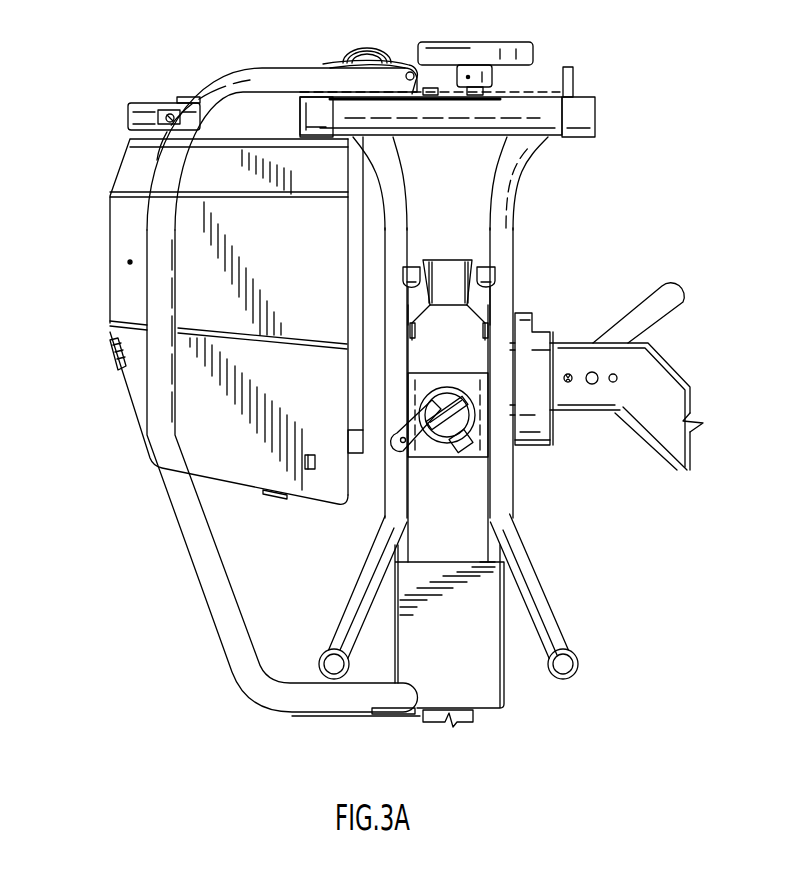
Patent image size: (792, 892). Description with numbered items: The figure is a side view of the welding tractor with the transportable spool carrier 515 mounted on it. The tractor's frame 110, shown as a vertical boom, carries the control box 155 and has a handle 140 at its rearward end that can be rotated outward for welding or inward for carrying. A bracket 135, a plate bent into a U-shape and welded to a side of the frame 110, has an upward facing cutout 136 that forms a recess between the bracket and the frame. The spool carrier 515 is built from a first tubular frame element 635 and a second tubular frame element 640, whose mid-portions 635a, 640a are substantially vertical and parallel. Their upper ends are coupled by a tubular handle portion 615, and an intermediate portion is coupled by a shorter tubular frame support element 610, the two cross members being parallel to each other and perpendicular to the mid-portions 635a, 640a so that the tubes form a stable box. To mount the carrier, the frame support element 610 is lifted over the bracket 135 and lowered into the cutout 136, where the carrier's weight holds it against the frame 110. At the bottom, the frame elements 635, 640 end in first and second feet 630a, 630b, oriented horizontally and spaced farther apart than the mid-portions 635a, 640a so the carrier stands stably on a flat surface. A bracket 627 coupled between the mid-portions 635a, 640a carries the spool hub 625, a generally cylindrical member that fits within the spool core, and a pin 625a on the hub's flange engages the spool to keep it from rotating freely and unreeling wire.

The frame 110 is at (462, 653).
The bracket 135 is at (447, 258).
The upward facing cutout 136 is at (480, 272).
The second handle 140 is at (195, 587).
The control box 155 is at (250, 217).
The transportable spool carrier 515 is at (471, 362).
The tubular frame support element 610 is at (442, 397).
The tubular handle portion 615 is at (528, 130).
The spool hub 625 is at (442, 402).
The pin 625a is at (401, 437).
The bracket 627 is at (446, 458).
The first foot 630a is at (580, 659).
The second foot 630b is at (318, 663).
The first tubular frame element 635 is at (543, 588).
The mid-portion of first tubular frame element 635a is at (515, 502).
The second tubular frame element 640 is at (357, 592).
The mid-portion of second tubular frame element 640a is at (386, 503).